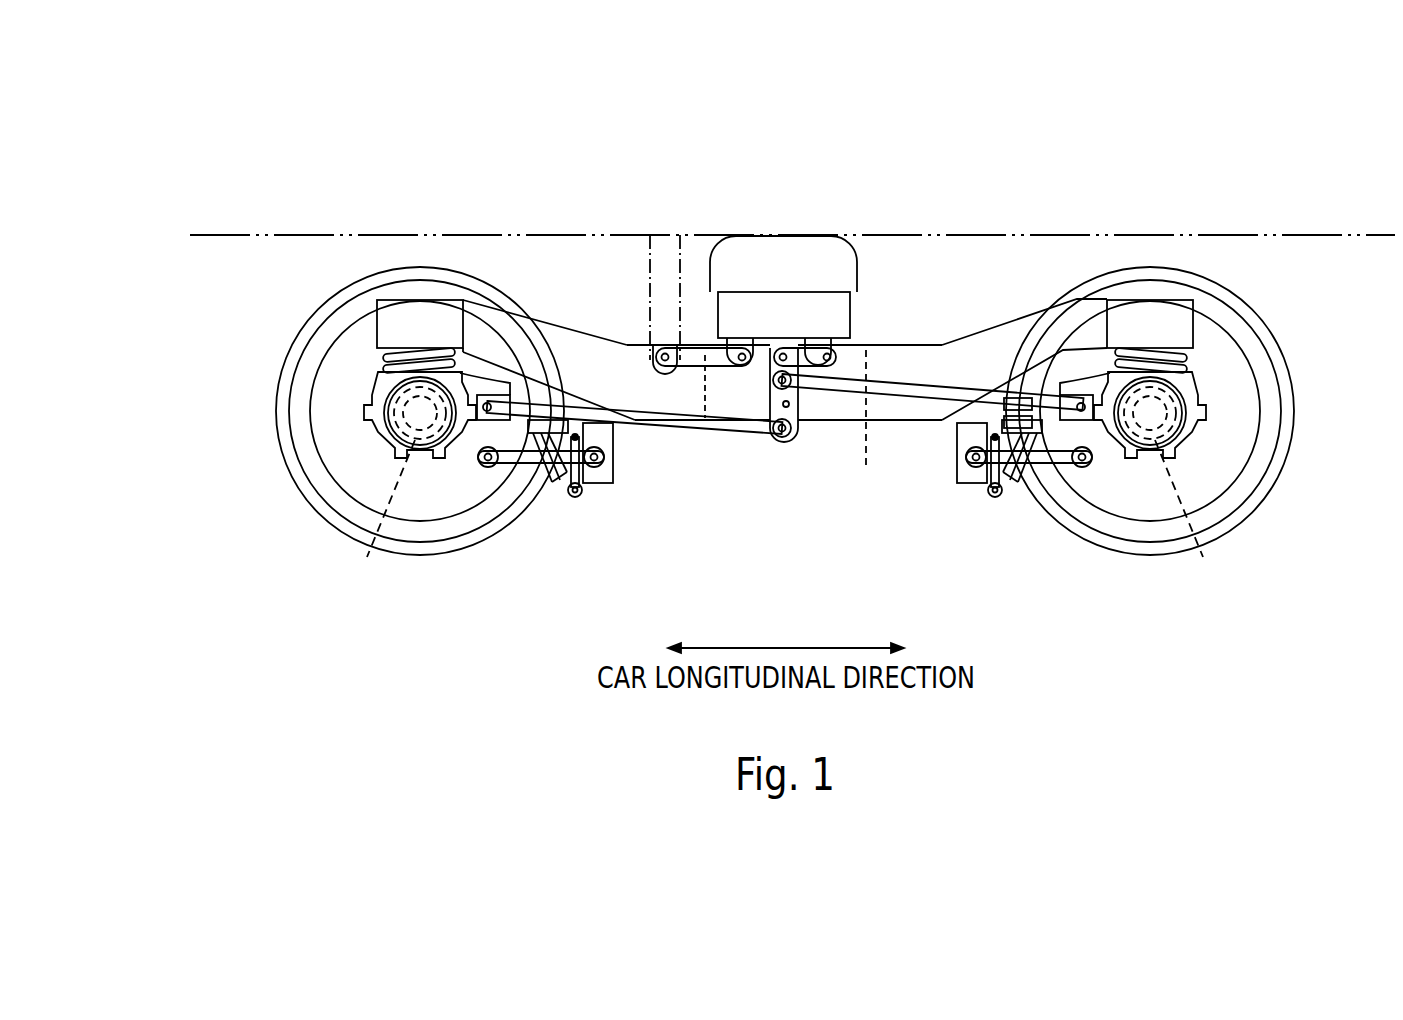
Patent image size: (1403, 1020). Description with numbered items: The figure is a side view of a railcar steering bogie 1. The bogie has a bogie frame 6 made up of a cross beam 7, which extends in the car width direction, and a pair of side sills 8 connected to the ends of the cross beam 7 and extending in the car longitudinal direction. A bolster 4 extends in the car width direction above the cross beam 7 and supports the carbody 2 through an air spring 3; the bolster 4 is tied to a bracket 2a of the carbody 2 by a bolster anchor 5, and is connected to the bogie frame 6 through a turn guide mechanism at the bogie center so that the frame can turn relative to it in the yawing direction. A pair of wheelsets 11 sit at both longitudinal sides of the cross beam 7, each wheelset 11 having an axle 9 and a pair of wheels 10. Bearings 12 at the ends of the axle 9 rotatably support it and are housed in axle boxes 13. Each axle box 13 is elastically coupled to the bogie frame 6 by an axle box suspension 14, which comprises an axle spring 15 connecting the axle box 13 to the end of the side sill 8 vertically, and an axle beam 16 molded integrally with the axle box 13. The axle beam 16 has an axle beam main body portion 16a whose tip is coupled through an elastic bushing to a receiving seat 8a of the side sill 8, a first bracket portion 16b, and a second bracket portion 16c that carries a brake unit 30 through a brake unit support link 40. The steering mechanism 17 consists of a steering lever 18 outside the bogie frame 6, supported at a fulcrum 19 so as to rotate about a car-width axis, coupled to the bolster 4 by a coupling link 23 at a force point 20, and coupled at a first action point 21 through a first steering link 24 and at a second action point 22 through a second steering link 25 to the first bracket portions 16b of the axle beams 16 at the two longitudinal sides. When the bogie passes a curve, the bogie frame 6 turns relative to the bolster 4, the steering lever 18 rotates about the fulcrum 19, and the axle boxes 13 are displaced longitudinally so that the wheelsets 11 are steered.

The railcar steering bogie 1 is at (240, 292).
The carbody 2 is at (212, 235).
The bracket 2a is at (652, 235).
The air spring 3 is at (838, 262).
The bolster 4 is at (877, 290).
The bolster anchor 5 is at (703, 345).
The bogie frame 6 is at (920, 506).
The cross beam 7 is at (868, 472).
The side sill 8 is at (918, 421).
The receiving seat 8a is at (540, 390).
The axle 9 is at (364, 560).
The wheel 10 is at (330, 530).
The wheelset 11 is at (375, 626).
The bearing 12 is at (372, 414).
The axle box 13 is at (380, 433).
The axle box suspension 14 is at (452, 470).
The axle spring 15 is at (385, 356).
The axle beam 16 is at (503, 360).
The axle beam main body portion 16a is at (487, 365).
The first bracket portion 16b is at (433, 348).
The second bracket portion 16c is at (483, 473).
The steering mechanism 17 is at (827, 406).
The steering lever 18 is at (786, 408).
The fulcrum 19 is at (797, 435).
The force point 20 is at (787, 347).
The first action point 21 is at (777, 388).
The second action point 22 is at (773, 432).
The coupling link 23 is at (813, 340).
The first steering link 24 is at (657, 421).
The second steering link 25 is at (940, 398).
The brake unit 30 is at (597, 480).
The brake unit support link 40 is at (530, 468).